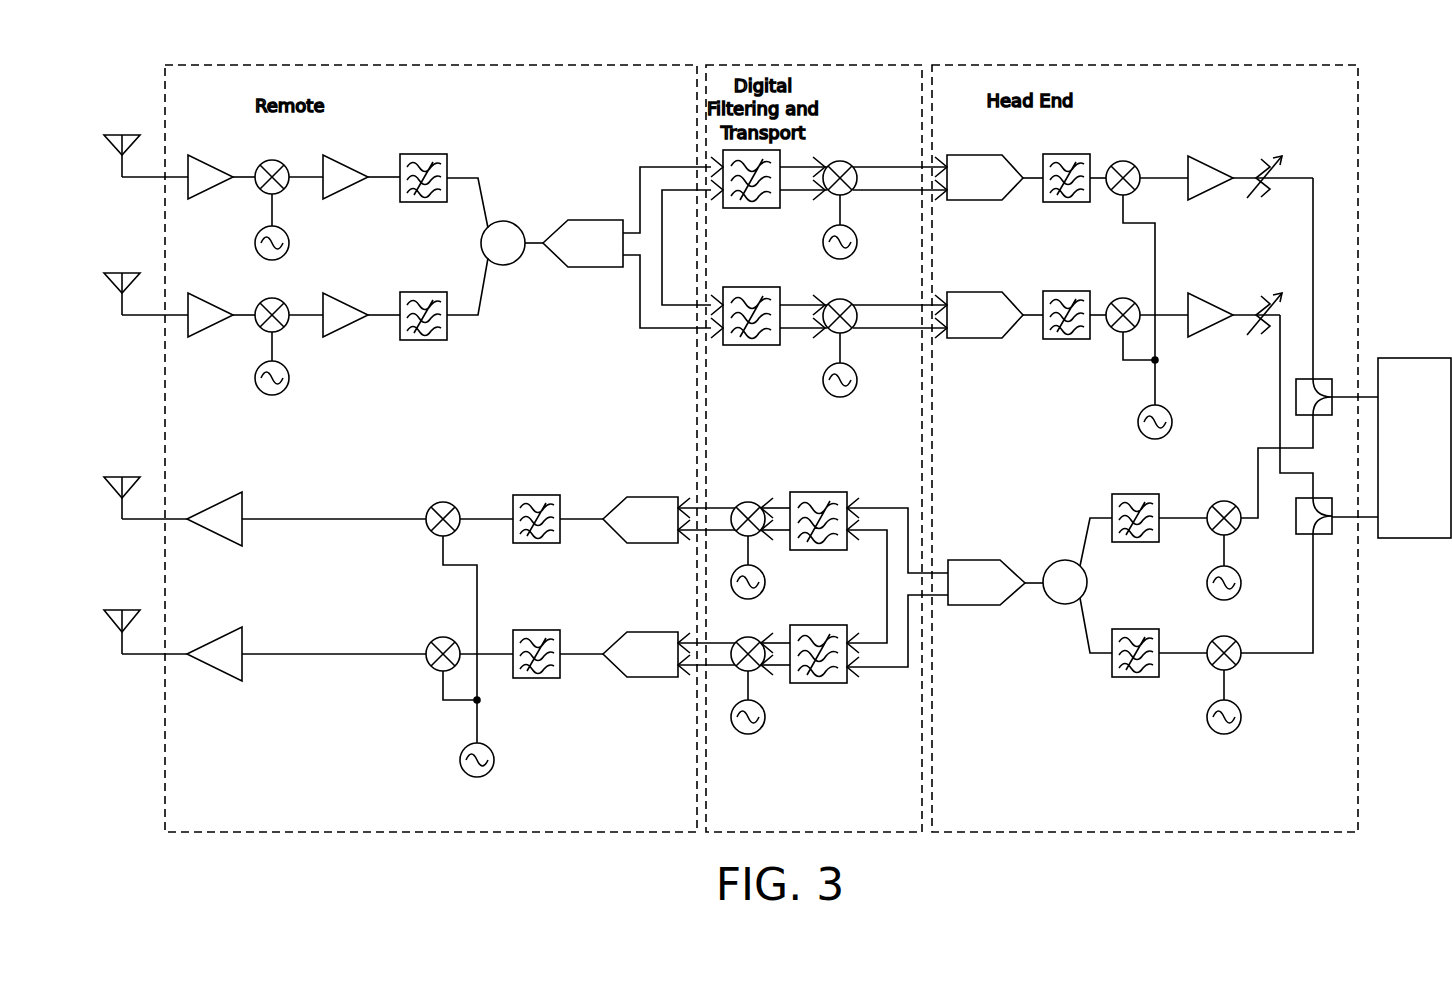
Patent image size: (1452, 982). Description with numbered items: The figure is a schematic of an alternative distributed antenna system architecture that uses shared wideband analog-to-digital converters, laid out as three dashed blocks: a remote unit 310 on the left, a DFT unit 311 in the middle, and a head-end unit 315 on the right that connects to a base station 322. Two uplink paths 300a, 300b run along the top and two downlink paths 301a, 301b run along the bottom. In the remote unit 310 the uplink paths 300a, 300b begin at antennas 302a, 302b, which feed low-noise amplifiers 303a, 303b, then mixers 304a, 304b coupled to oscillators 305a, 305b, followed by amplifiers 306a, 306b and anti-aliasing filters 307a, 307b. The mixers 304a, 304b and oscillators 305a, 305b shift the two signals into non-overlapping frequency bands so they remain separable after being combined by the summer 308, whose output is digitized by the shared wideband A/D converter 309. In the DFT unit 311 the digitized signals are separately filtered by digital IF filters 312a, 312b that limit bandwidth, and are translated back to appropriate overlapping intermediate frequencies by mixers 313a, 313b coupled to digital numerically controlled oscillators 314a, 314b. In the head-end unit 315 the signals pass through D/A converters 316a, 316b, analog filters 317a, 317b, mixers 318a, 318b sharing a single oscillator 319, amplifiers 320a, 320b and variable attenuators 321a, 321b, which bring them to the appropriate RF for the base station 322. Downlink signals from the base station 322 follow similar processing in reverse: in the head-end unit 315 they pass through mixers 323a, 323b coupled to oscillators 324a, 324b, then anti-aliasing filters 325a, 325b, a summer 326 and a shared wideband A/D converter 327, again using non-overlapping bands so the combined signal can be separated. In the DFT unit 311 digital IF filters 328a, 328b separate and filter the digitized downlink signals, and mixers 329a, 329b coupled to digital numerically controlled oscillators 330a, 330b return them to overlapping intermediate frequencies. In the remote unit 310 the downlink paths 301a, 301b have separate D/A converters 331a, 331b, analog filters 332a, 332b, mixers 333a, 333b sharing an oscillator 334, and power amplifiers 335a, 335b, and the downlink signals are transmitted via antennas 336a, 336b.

The uplink path 300a is at (150, 178).
The uplink path 300b is at (150, 316).
The downlink path 301a is at (150, 520).
The downlink path 301b is at (150, 655).
The antenna 302a is at (138, 133).
The antenna 302b is at (138, 272).
The low-noise amplifier 303a is at (212, 163).
The low-noise amplifier 303b is at (212, 300).
The mixer 304a is at (257, 166).
The mixer 304b is at (257, 304).
The oscillator 305a is at (290, 245).
The oscillator 305b is at (290, 381).
The amplifier 306a is at (348, 166).
The amplifier 306b is at (348, 302).
The anti-aliasing filter 307a is at (437, 154).
The anti-aliasing filter 307b is at (437, 292).
The summer 308 is at (525, 260).
The shared wideband A/D converter 309 is at (600, 220).
The remote unit 310 is at (413, 65).
The DFT unit 311 is at (757, 65).
The digital IF filter 312a is at (735, 208).
The digital IF filter 312b is at (735, 345).
The mixer 313a is at (840, 161).
The mixer 313b is at (840, 299).
The digital numerically controlled oscillator 314a is at (858, 243).
The digital numerically controlled oscillator 314b is at (858, 381).
The head-end unit 315 is at (1078, 65).
The D/A converter 316a is at (988, 155).
The D/A converter 316b is at (988, 292).
The analog filter 317a is at (1080, 154).
The analog filter 317b is at (1080, 291).
The mixer 318a is at (1138, 165).
The mixer 318b is at (1138, 302).
The oscillator 319 is at (1173, 420).
The amplifier 320a is at (1210, 165).
The amplifier 320b is at (1210, 302).
The variable attenuator 321a is at (1250, 160).
The variable attenuator 321b is at (1250, 297).
The base station 322 is at (1433, 358).
The mixer 323a is at (1212, 505).
The mixer 323b is at (1240, 643).
The oscillator 324a is at (1242, 585).
The oscillator 324b is at (1242, 720).
The anti-aliasing filter 325a is at (1147, 494).
The anti-aliasing filter 325b is at (1147, 629).
The summer 326 is at (1047, 570).
The shared wideband A/D converter 327 is at (980, 560).
The digital IF filter 328a is at (805, 492).
The digital IF filter 328b is at (808, 683).
The mixer 329a is at (740, 503).
The mixer 329b is at (752, 636).
The digital numerically controlled oscillator 330a is at (766, 582).
The digital numerically controlled oscillator 330b is at (766, 718).
The D/A converter 331a is at (655, 497).
The D/A converter 331b is at (655, 632).
The analog filter 332a is at (548, 495).
The analog filter 332b is at (548, 630).
The mixer 333a is at (425, 507).
The mixer 333b is at (425, 642).
The oscillator 334 is at (495, 755).
The power amplifier 335a is at (213, 506).
The power amplifier 335b is at (213, 641).
The antenna 336a is at (138, 476).
The antenna 336b is at (138, 609).